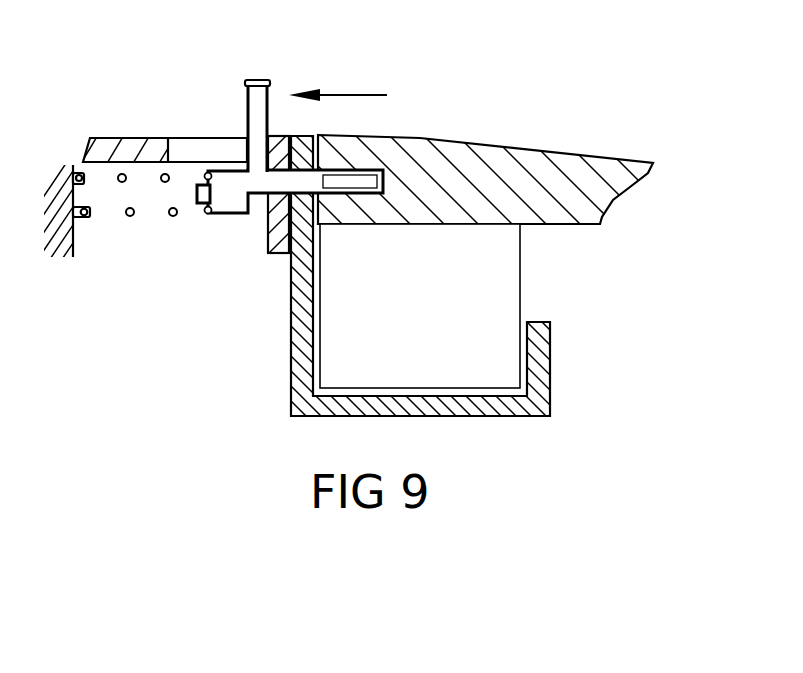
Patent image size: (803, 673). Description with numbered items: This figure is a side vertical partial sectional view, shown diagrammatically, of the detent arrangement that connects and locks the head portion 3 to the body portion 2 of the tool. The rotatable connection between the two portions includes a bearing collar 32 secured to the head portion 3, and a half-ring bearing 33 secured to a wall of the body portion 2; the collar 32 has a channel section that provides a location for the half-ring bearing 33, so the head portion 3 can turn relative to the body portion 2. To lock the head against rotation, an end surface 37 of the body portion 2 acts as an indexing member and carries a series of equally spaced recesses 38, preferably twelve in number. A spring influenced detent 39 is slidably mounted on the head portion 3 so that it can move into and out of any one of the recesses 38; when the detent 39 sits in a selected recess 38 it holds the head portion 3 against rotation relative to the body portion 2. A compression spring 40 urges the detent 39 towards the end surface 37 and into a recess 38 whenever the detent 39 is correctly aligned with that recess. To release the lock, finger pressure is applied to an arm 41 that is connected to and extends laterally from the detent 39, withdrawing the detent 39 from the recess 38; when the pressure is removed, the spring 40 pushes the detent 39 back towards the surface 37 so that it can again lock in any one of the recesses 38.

The body portion 2 is at (547, 127).
The head portion 3 is at (129, 113).
The bearing collar 32 is at (274, 376).
The half-ring bearing 33 is at (485, 313).
The end surface 37 is at (327, 160).
The recess 38 is at (383, 181).
The detent 39 is at (350, 182).
The compression spring 40 is at (131, 217).
The arm 41 is at (258, 93).